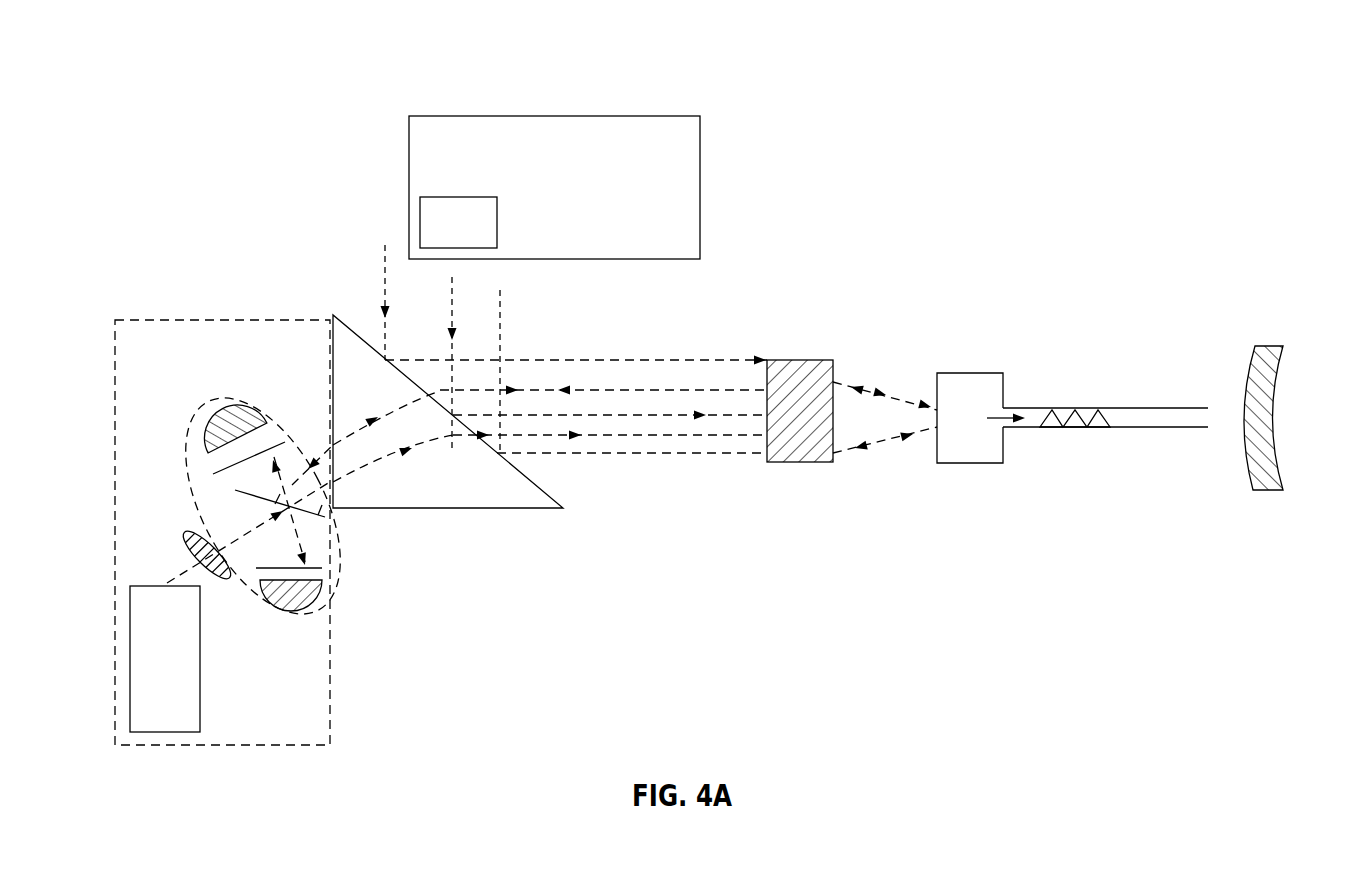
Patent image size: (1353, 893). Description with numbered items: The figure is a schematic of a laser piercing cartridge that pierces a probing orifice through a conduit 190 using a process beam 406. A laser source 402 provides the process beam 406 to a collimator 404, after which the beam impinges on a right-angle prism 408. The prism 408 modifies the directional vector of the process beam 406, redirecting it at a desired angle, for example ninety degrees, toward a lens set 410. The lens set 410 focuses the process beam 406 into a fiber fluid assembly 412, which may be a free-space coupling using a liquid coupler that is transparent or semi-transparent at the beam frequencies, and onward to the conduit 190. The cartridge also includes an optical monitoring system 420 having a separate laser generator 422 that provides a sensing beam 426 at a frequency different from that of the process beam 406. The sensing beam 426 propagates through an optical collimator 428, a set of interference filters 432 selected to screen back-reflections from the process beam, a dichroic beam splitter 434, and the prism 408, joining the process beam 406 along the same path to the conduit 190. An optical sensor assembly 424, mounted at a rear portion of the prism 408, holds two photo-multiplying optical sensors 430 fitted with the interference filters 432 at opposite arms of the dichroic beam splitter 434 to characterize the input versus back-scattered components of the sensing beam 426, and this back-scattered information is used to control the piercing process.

The conduit 190 is at (1270, 346).
The laser source 402 is at (637, 259).
The collimator 404 is at (457, 197).
The process beam 406 is at (643, 417).
The prism 408 is at (523, 508).
The lens set 410 is at (803, 462).
The fiber fluid assembly 412 is at (988, 373).
The optical monitoring system 420 is at (183, 318).
The laser generator 422 is at (165, 732).
The optical sensor assembly 424 is at (208, 405).
The sensing beam 426 is at (727, 437).
The optical collimator 428 is at (185, 545).
The optical sensors 430 is at (215, 432).
The interference filters 432 is at (213, 473).
The dichroic beam splitter 434 is at (325, 517).